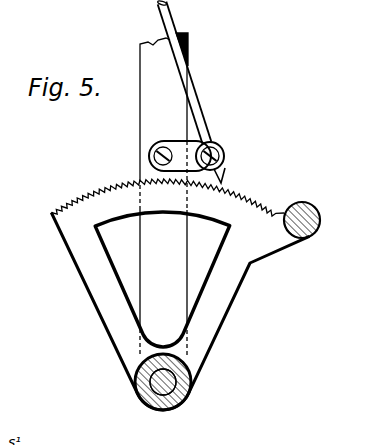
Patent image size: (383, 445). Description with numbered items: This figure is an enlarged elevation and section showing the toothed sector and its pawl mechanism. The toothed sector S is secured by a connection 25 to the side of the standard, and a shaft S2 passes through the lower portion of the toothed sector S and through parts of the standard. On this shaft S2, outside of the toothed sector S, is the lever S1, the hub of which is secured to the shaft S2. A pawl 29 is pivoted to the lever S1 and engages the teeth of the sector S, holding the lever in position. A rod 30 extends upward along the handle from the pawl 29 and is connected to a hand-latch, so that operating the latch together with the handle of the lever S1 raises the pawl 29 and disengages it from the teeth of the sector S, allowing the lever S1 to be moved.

The rod 30 is at (198, 118).
The pawl 29 is at (225, 164).
The connection 25 is at (312, 237).
The toothed sector S is at (103, 168).
The lever S1 is at (162, 279).
The shaft S2 is at (172, 384).